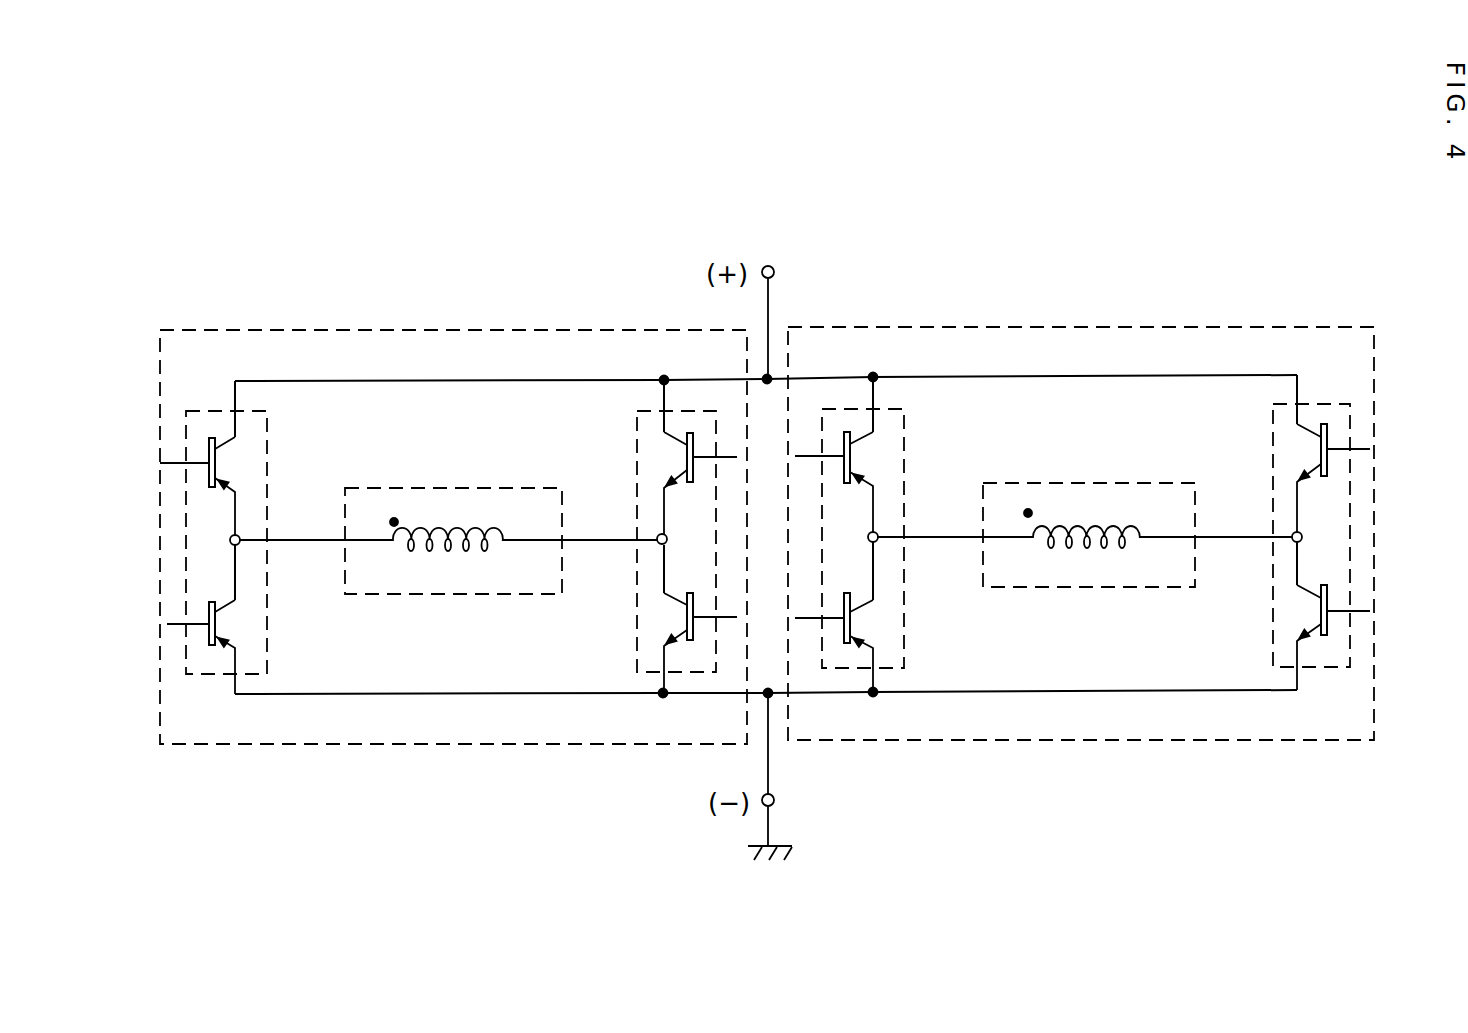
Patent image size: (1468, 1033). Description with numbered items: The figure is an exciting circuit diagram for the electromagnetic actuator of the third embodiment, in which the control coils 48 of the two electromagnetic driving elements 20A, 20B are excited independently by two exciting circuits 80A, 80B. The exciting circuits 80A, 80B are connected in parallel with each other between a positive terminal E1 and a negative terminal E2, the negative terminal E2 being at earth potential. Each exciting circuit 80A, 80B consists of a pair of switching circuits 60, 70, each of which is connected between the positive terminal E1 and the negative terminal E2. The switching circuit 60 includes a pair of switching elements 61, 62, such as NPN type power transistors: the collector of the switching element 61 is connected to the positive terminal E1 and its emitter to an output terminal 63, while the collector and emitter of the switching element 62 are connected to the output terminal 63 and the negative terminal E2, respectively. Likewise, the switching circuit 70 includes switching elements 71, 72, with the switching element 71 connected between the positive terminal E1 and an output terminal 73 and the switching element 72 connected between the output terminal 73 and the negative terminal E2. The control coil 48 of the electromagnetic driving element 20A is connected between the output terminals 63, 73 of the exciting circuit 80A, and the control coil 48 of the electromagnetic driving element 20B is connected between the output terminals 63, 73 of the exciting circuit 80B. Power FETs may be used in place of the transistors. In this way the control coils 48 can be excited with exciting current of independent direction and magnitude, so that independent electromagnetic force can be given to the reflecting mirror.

The exciting circuit 80A is at (1221, 322).
The exciting circuit 80B is at (512, 330).
The switching circuit 70 is at (268, 412).
The switching element 71 is at (222, 462).
The switching element 72 is at (222, 632).
The output terminal 73 is at (238, 550).
The switching circuit 60 is at (637, 411).
The switching element 61 is at (685, 460).
The switching element 62 is at (672, 620).
The output terminal 63 is at (660, 547).
The electromagnetic driving element 20A is at (1105, 483).
The electromagnetic driving element 20B is at (468, 488).
The control coil 48 is at (445, 552).
The positive terminal E1 is at (775, 271).
The negative terminal E2 is at (775, 800).